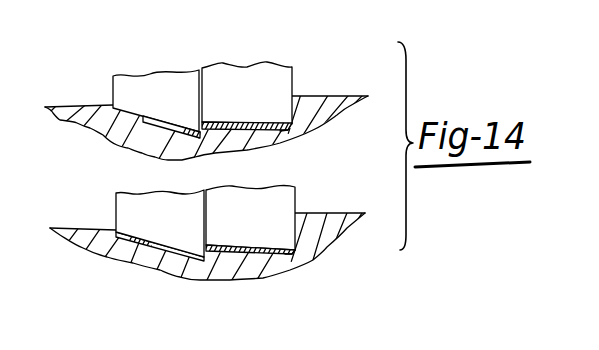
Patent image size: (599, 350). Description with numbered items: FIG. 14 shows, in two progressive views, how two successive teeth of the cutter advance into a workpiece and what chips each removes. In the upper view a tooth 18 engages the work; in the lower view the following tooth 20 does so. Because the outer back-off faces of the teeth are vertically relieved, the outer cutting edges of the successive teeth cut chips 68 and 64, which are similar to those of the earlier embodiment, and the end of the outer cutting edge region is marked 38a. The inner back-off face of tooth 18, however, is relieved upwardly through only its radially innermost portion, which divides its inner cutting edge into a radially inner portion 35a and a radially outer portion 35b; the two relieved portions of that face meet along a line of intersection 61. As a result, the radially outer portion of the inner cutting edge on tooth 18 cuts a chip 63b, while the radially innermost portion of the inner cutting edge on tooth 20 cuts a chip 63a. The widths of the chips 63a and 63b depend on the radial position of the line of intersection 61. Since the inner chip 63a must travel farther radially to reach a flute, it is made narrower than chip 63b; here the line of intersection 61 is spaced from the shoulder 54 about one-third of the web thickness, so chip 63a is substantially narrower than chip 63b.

The tooth 18 is at (293, 70).
The tooth 20 is at (297, 203).
The radially inner portion of inner cutting edge 35a is at (117, 140).
The radially outer portion of inner cutting edge 35b is at (170, 138).
The bonding layer end 38a is at (285, 130).
The shoulder 54 is at (207, 232).
The line of intersection 61 is at (133, 267).
The chip 63a is at (128, 232).
The chip 63b is at (180, 120).
The chip 64 is at (291, 256).
The chip 68 is at (232, 128).